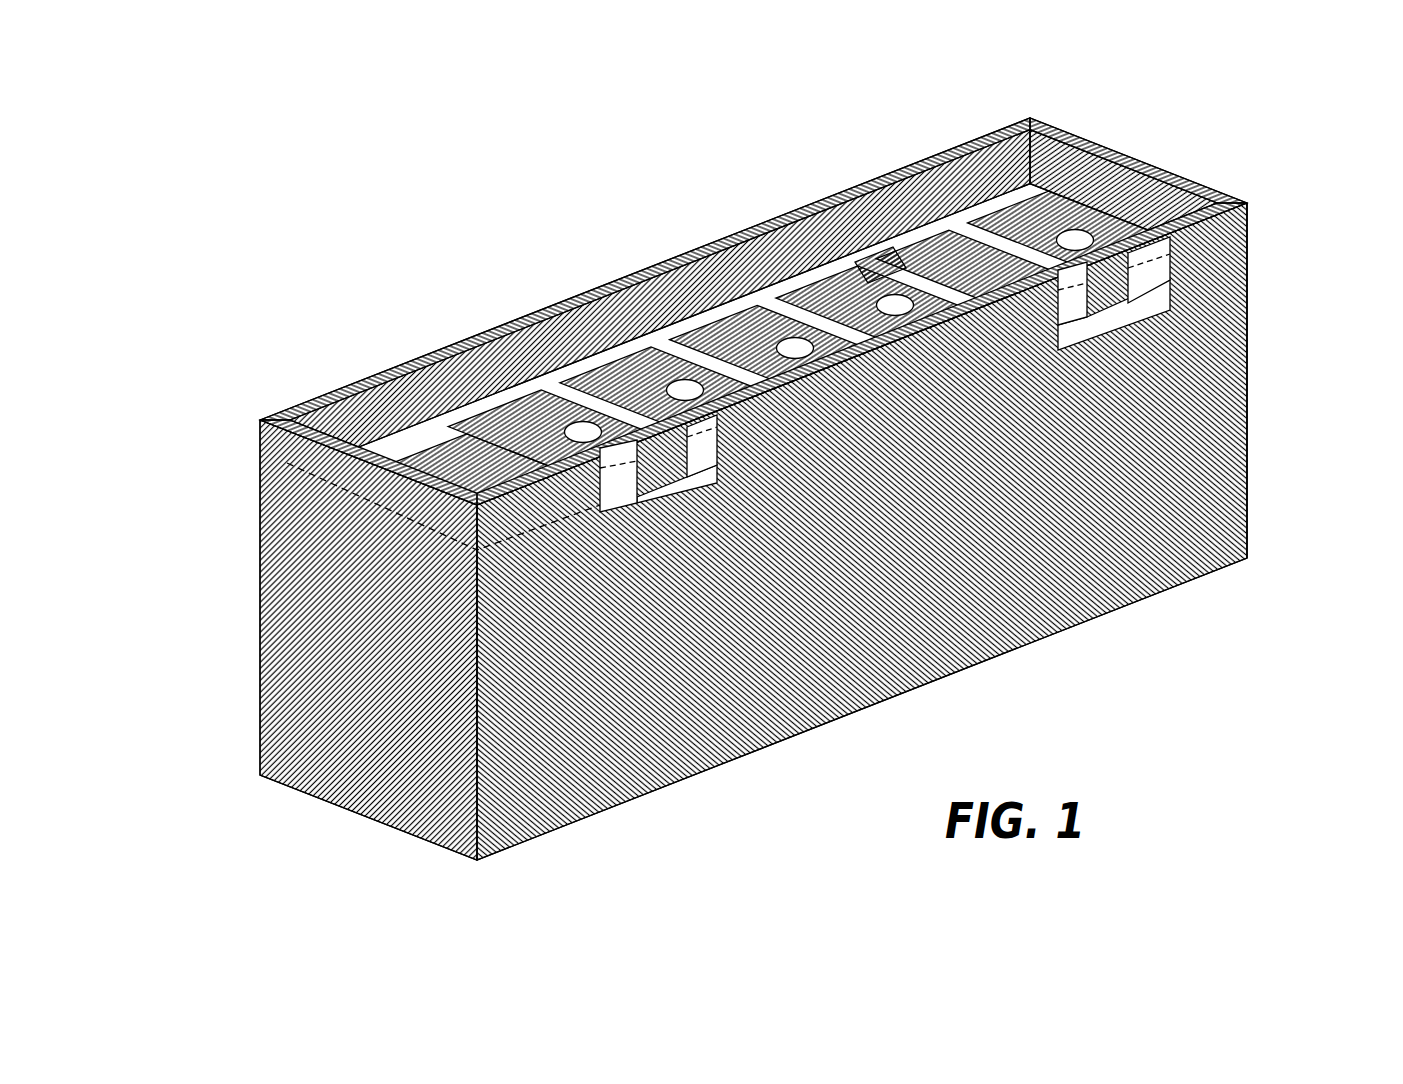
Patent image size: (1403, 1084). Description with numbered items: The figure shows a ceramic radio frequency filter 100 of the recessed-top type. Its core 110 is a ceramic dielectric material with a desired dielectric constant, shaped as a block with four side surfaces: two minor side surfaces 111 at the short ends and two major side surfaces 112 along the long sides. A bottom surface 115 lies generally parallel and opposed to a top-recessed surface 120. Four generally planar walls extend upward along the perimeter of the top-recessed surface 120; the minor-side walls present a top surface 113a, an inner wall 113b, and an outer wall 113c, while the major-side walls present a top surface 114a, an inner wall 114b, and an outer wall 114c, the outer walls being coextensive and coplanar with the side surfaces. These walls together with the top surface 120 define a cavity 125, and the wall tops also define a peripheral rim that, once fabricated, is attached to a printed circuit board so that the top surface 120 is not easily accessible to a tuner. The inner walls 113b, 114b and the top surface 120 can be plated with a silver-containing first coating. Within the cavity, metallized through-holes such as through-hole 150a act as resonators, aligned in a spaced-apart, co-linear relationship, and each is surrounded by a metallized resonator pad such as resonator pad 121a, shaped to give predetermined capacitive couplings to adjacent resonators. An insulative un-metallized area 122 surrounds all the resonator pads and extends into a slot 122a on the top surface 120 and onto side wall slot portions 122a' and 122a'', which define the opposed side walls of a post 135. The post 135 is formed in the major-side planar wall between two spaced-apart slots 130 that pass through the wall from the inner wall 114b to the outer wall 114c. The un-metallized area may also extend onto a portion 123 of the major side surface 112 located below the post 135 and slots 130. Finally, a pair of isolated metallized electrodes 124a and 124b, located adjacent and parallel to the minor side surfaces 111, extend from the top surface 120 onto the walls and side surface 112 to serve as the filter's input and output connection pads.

The radio frequency filter 100 is at (370, 108).
The core 110 is at (850, 566).
The minor side surfaces 111 is at (297, 553).
The major side surfaces 112 is at (540, 796).
The top surface of walls 113 113a is at (1176, 195).
The inner walls of walls 113 113b is at (1085, 177).
The outer walls of walls 113 113c is at (372, 470).
The top surface of walls 114 114a is at (905, 236).
The inner walls of walls 114 114b is at (336, 412).
The outer walls of walls 114 114c is at (553, 525).
The bottom surface 115 is at (1163, 590).
The top-recessed surface 120 is at (920, 244).
The resonator pad 121a is at (484, 412).
The un-metallized area 122 is at (488, 440).
The slot of un-metallized area 122a is at (695, 668).
The side wall slot portion 122a' is at (636, 675).
The side wall slot portion 122a'' is at (777, 617).
The portion of side surface 123 is at (1140, 290).
The input connection area or electrode 124a is at (340, 410).
The output connection area or electrode 124b is at (1000, 190).
The cavity 125 is at (992, 184).
The slots 130 is at (1090, 320).
The post 135 is at (1128, 268).
The through-hole 150a is at (748, 262).